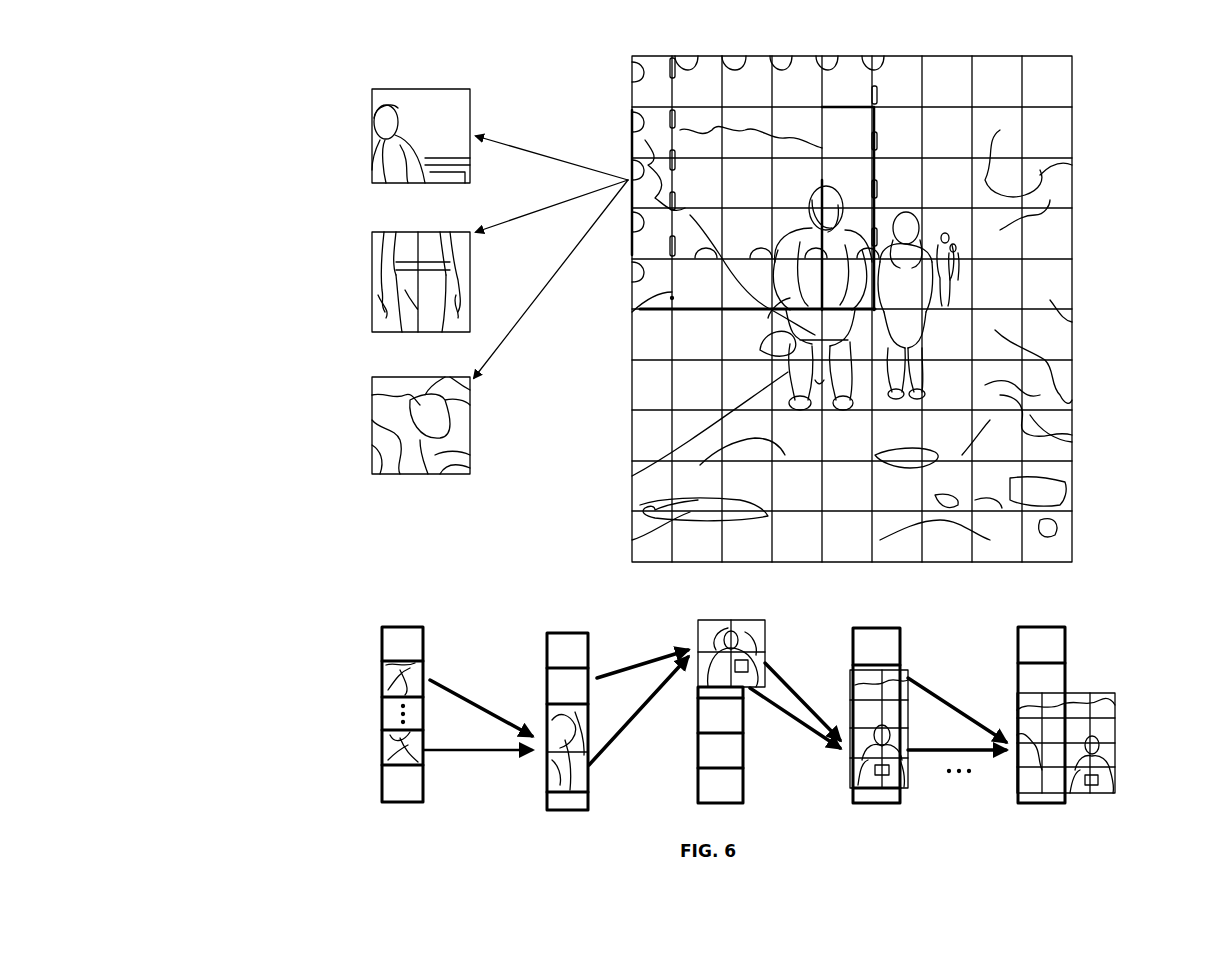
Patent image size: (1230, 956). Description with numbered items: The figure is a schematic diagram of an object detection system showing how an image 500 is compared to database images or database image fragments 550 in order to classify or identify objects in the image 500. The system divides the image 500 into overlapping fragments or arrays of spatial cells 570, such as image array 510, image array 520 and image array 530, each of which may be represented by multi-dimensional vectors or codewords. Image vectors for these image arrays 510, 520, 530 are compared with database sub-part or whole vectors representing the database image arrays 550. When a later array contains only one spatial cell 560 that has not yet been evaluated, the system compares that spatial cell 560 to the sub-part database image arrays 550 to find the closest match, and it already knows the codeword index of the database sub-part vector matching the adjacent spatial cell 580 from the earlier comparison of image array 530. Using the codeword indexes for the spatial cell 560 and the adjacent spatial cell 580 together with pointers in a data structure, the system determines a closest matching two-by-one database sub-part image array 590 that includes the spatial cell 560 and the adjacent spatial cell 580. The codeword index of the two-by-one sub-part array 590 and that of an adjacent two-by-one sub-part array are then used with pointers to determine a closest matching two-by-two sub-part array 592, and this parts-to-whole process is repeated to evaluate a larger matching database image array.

The image 500 is at (1170, 108).
The image array 510 is at (630, 80).
The image array 520 is at (632, 140).
The image array 530 is at (880, 90).
The database image arrays 550 is at (372, 162).
The spatial cell 560 is at (960, 252).
The spatial cells 570 is at (1072, 512).
The adjacent spatial cell 580 is at (920, 215).
The 2x1 database sub-part image array 590 is at (568, 715).
The 2x2 sub-part array 592 is at (746, 677).